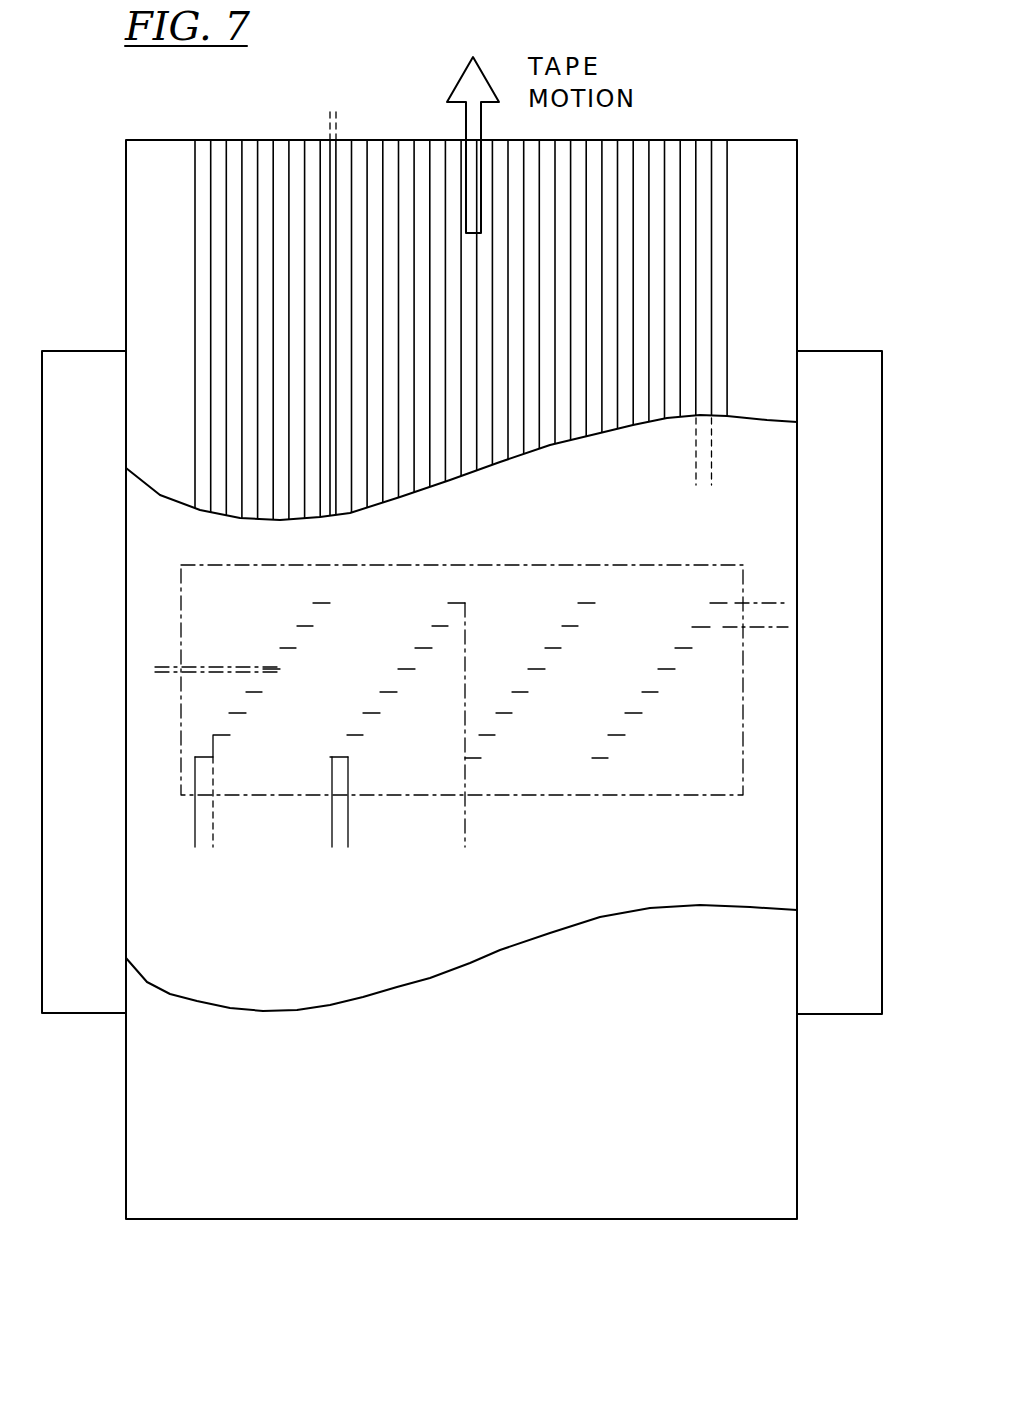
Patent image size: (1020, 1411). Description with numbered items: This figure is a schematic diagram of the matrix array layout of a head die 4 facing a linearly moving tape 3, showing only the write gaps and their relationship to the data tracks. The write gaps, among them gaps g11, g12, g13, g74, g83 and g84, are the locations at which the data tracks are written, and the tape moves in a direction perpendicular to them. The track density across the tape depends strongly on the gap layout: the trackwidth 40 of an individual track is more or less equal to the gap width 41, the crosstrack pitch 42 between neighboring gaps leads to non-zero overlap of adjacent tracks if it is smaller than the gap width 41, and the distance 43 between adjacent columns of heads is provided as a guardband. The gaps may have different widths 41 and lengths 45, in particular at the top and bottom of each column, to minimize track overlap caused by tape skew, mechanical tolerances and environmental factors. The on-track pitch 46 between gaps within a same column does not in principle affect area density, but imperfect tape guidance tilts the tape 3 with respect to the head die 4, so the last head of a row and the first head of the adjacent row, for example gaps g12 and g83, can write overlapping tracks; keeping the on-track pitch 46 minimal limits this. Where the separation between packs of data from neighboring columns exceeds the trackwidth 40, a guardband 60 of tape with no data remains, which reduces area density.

The tape 3 is at (758, 268).
The head die 4 is at (237, 957).
The trackwidth 40 is at (768, 482).
The gap width 41 is at (410, 847).
The crosstrack pitch 42 is at (148, 847).
The guardband distance between adjacent columns 43 is at (414, 847).
The gap length 45 is at (165, 722).
The on-track pitch 46 is at (770, 615).
The guardband 60 is at (390, 120).
The write gap g11 is at (262, 671).
The write gap g12 is at (397, 671).
The write gap g13 is at (537, 660).
The write gap g74 is at (643, 677).
The write gap g83 is at (497, 763).
The write gap g84 is at (623, 763).